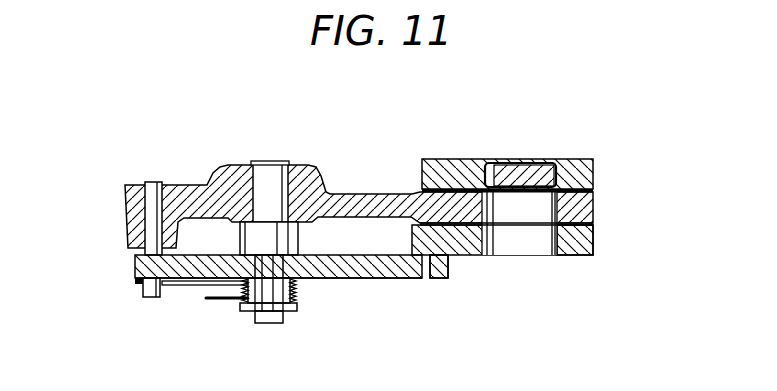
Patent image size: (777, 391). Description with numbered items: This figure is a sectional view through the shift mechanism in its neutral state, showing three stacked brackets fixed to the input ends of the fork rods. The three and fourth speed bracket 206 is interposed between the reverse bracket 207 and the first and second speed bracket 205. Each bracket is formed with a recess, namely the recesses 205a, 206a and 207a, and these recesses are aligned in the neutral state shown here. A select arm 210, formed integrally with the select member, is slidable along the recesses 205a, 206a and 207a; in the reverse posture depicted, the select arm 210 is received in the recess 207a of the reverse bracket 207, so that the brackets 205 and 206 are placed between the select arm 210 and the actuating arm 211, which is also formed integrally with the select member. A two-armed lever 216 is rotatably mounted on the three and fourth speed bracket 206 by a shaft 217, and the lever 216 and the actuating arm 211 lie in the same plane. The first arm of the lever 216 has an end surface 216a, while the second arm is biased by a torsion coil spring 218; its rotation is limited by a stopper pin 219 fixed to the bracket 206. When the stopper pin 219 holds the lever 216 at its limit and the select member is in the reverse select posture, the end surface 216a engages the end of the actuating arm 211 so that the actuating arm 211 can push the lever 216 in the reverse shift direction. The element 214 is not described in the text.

The first and second speed bracket 205 is at (580, 257).
The recess 205a is at (557, 208).
The three and fourth speed bracket 206 is at (583, 210).
The recess 206a is at (585, 238).
The reverse bracket 207 is at (571, 168).
The recess 207a is at (492, 166).
The select arm 210 is at (513, 170).
The actuating arm 211 is at (440, 284).
The base 214 is at (318, 281).
The two-armed lever 216 is at (368, 282).
The end surface 216a is at (436, 280).
The shaft 217 is at (266, 178).
The torsion coil spring 218 is at (188, 286).
The stopper pin 219 is at (146, 286).